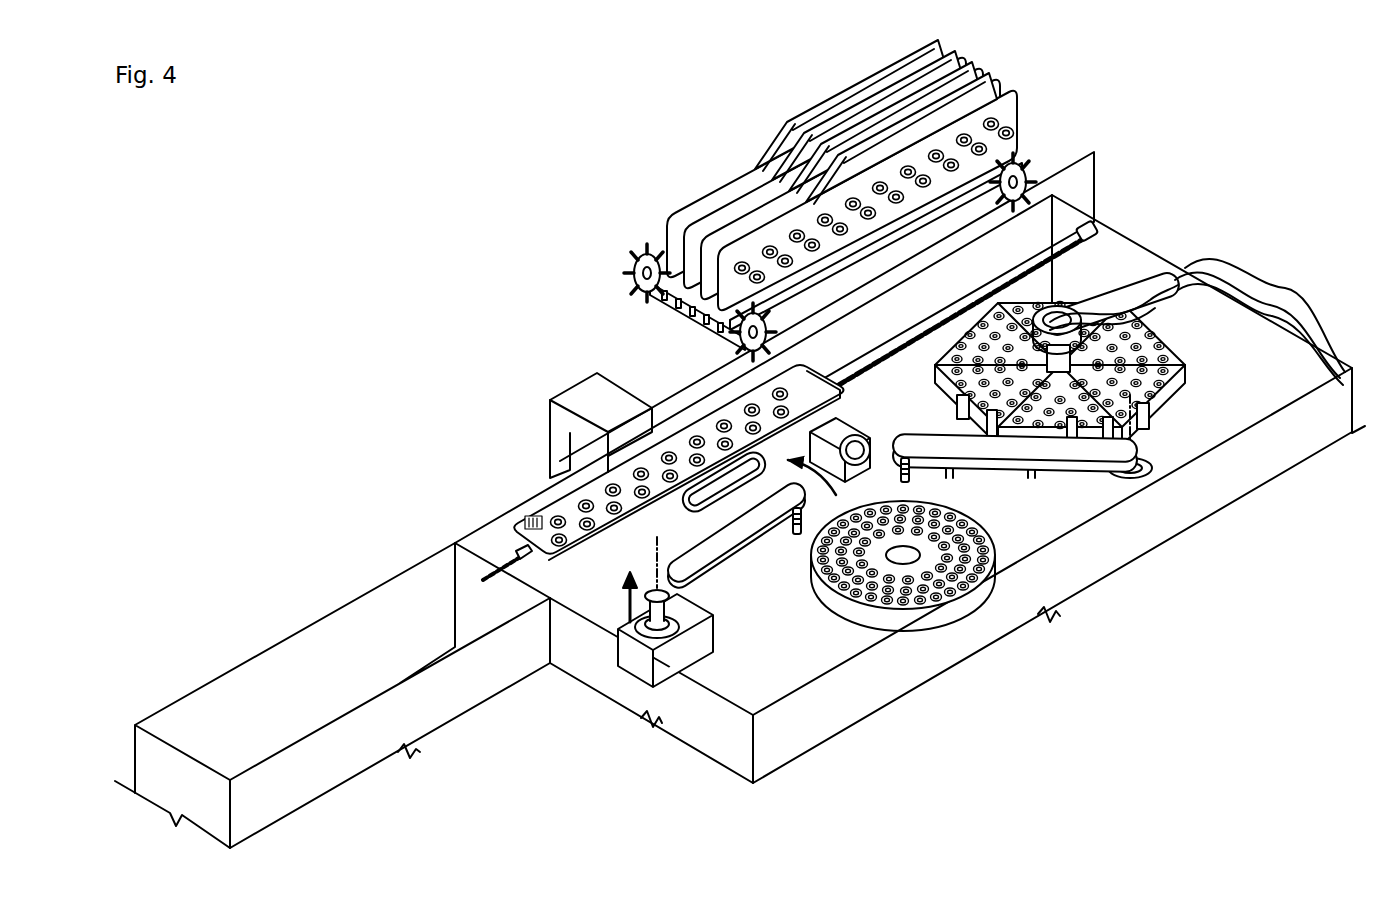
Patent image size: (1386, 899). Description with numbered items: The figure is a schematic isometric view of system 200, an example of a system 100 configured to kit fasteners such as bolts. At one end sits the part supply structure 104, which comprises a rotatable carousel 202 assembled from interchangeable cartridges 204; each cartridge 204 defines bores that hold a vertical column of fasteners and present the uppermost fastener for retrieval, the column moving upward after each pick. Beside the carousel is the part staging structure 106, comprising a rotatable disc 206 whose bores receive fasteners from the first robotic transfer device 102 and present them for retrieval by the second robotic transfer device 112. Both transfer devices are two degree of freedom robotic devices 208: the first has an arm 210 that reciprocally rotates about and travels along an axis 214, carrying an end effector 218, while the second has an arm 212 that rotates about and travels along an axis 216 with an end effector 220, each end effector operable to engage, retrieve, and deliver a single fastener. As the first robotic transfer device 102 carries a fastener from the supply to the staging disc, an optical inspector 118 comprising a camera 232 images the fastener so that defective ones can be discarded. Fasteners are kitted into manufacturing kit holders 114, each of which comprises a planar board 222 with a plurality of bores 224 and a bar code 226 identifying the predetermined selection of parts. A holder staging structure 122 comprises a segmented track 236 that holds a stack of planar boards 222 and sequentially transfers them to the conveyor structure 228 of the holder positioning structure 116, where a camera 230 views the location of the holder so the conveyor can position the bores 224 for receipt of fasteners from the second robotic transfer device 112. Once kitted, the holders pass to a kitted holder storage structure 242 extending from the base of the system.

The system 100 is at (372, 189).
The system 200 is at (441, 169).
The first robotic transfer device 102 is at (1158, 467).
The part supply structure 104 is at (1195, 381).
The part staging structure 106 is at (867, 585).
The second robotic transfer device 112 is at (631, 631).
The manufacturing kit holder 114 is at (897, 82).
The holder positioning structure 116 is at (940, 313).
The optical inspector 118 is at (800, 447).
The holder staging structure 122 is at (632, 328).
The rotatable carousel 202 is at (1188, 354).
The cartridge 204 is at (1064, 300).
The rotatable disc 206 is at (856, 626).
The two degree of freedom robotic device 208 is at (992, 468).
The arm 210 is at (1068, 459).
The arm 212 is at (718, 540).
The axis 214 is at (1142, 421).
The axis 216 is at (655, 562).
The end effector 218 is at (889, 462).
The end effector 220 is at (794, 522).
The planar board 222 is at (940, 40).
The bores 224 is at (855, 232).
The bar code 226 is at (516, 548).
The conveyor structure 228 is at (982, 296).
The camera 230 is at (642, 452).
The camera 232 is at (885, 455).
The segmented track 236 is at (1023, 162).
The kitted holder storage structure 242 is at (298, 628).